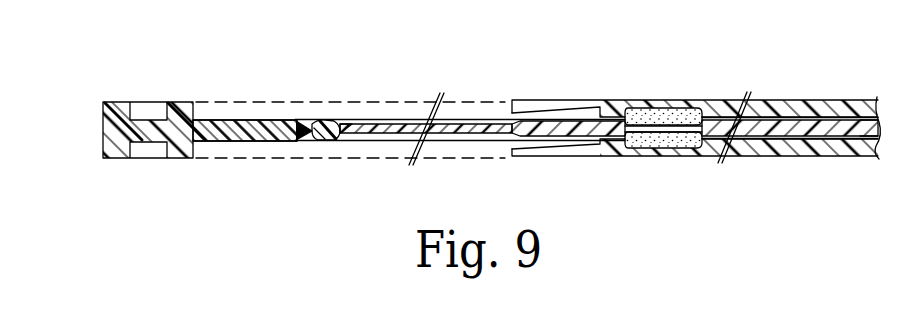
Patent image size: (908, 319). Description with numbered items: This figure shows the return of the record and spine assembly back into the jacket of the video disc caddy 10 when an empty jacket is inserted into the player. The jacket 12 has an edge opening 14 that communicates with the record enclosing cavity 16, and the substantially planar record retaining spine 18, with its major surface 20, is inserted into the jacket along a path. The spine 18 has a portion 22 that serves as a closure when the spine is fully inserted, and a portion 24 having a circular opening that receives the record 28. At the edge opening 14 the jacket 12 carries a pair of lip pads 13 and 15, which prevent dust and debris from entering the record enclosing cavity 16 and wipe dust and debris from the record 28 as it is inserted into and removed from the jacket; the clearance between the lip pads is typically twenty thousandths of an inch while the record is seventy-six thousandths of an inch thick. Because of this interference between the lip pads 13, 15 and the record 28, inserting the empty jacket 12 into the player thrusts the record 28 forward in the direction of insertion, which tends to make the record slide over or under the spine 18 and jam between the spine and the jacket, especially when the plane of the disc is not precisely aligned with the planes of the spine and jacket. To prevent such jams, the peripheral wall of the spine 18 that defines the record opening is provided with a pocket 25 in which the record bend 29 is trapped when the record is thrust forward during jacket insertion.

The video disc caddy 10 is at (510, 40).
The jacket 12 is at (813, 67).
The lip pad 13 is at (664, 114).
The edge opening 14 is at (520, 112).
The lip pad 15 is at (673, 140).
The record enclosing cavity 16 is at (874, 137).
The record retaining spine 18 is at (182, 92).
The major surface 20 is at (226, 118).
The closure portion 22 is at (104, 110).
The record receiving portion 24 is at (265, 125).
The pocket 25 is at (309, 140).
The record 28 is at (549, 127).
The record bend 29 is at (328, 122).